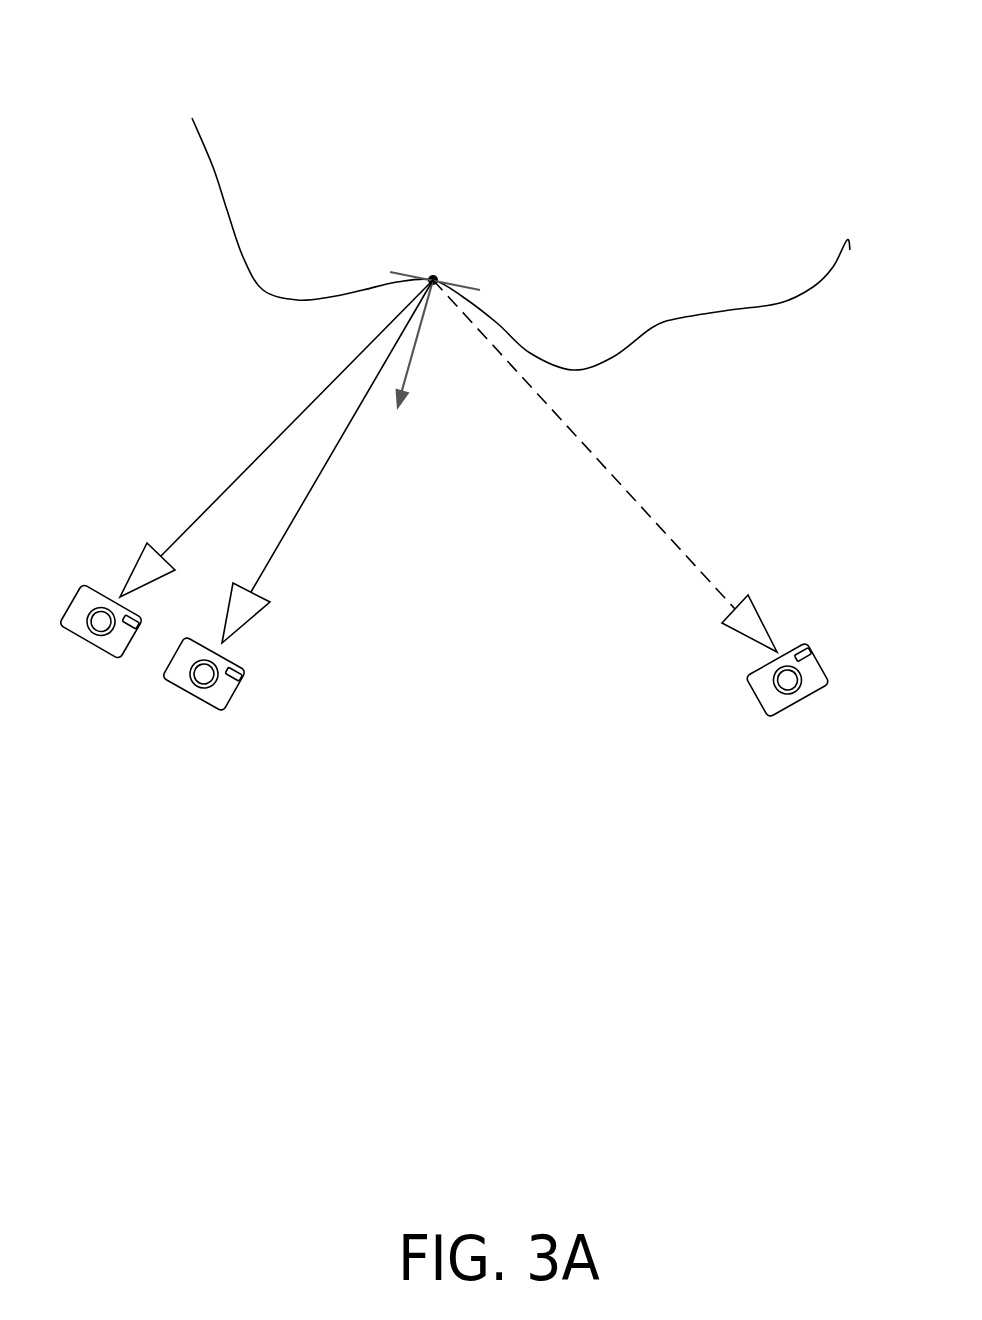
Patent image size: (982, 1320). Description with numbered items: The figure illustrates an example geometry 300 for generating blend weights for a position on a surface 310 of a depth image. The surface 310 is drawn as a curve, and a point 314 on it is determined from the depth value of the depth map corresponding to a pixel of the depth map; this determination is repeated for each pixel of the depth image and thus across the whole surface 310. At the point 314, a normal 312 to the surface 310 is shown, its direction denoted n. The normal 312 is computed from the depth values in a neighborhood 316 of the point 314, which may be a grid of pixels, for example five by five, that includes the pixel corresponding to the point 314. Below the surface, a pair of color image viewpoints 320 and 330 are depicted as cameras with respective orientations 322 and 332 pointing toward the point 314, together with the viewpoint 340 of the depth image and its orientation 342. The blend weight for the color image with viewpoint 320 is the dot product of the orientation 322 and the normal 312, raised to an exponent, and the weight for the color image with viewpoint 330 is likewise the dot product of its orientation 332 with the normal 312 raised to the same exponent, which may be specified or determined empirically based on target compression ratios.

The geometry 300 is at (212, 70).
The surface 310 is at (224, 207).
The normal 312 is at (411, 380).
The point 314 is at (437, 277).
The neighborhood 316 is at (397, 272).
The color image viewpoint 320 is at (92, 643).
The orientation 322 is at (328, 387).
The color image viewpoint 330 is at (782, 712).
The orientation 332 is at (630, 490).
The viewpoint of the depth image 340 is at (200, 702).
The orientation 342 is at (325, 469).